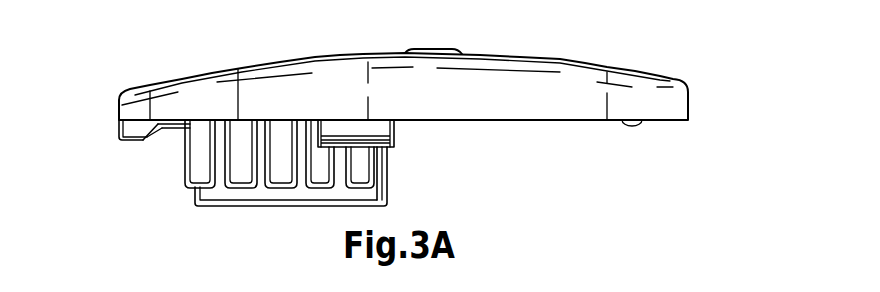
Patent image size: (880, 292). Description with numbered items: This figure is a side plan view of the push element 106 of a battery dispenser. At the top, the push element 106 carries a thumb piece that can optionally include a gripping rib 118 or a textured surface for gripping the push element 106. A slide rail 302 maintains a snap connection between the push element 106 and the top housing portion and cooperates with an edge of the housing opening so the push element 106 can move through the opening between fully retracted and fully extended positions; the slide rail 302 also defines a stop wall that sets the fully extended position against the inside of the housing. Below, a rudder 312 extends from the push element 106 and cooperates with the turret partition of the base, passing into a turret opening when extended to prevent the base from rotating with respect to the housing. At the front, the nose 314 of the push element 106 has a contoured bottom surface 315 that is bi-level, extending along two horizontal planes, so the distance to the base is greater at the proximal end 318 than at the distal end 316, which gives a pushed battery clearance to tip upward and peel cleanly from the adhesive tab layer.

The push element 106 is at (130, 55).
The gripping rib 118 is at (435, 50).
The slide rail 302 is at (387, 128).
The rudder 312 is at (223, 188).
The nose 314 is at (120, 121).
The bottom surface 315 is at (150, 132).
The distal end 316 is at (129, 144).
The proximal end 318 is at (167, 130).